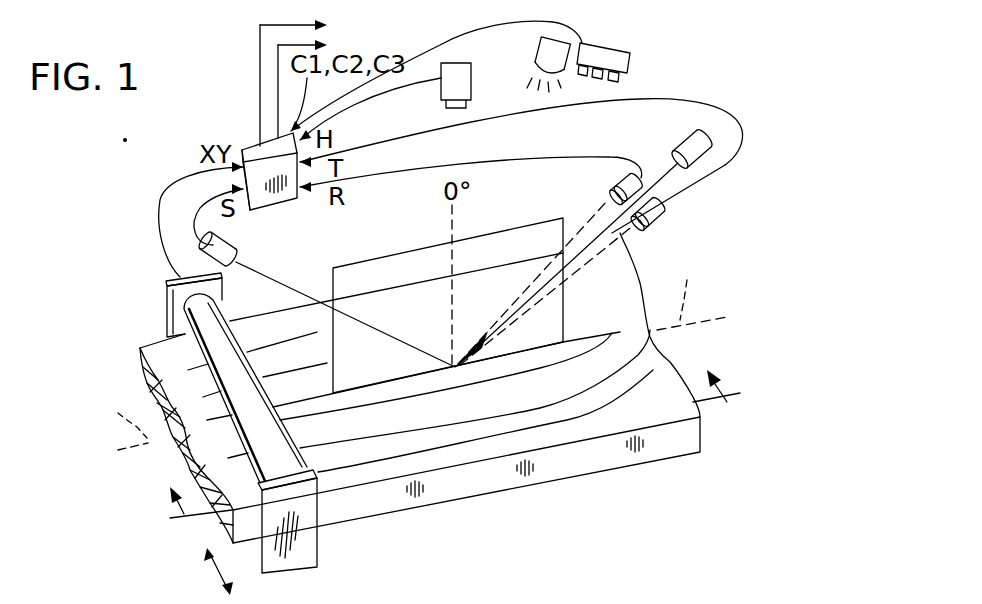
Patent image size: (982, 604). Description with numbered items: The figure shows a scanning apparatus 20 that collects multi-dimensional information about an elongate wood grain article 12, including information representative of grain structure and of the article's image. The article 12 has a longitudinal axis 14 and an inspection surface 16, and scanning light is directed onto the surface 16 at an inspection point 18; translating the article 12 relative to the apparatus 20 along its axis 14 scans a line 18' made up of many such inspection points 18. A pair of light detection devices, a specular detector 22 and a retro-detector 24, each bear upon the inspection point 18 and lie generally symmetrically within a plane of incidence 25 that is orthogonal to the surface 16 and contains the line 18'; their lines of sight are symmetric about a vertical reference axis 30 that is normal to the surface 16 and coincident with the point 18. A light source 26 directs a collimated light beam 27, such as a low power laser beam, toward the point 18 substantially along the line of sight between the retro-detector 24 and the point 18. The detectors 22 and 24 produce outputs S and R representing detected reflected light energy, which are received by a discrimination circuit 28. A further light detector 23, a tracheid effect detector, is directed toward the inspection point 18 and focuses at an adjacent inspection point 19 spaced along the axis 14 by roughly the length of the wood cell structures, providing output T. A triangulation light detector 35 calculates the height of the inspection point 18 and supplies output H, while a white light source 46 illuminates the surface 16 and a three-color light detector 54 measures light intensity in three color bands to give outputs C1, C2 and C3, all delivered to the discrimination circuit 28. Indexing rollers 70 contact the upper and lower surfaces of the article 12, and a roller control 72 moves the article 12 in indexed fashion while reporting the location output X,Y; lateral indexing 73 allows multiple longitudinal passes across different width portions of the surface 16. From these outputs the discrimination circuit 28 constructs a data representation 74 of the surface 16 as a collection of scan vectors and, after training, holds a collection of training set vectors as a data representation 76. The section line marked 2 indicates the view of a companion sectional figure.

The section line 2- 2 is at (461, 457).
The elongate wood grain article 12 is at (540, 472).
The longitudinal axis 14 is at (418, 341).
The inspection surface 16 is at (666, 411).
The inspection point 18 is at (465, 389).
The line 18' is at (600, 306).
The adjacent inspection point 19 is at (462, 368).
The scanning apparatus 20 is at (205, 178).
The specular detector 22 is at (228, 238).
The light detector (tracheid effect detector) 23 is at (660, 218).
The retro-detector 24 is at (612, 182).
The plane of incidence 25 is at (533, 232).
The light source 26 is at (686, 138).
The collimated light beam 27 is at (600, 228).
The discrimination circuit 28 is at (285, 193).
The vertical reference axis 30 is at (455, 266).
The triangulation light detector 35 is at (468, 75).
The white light source 46 is at (550, 57).
The three-color light detector 54 is at (630, 62).
The indexing rollers 70 is at (230, 318).
The roller control 72 is at (180, 277).
The lateral indexing 73 is at (218, 573).
The data representation 74 is at (278, 98).
The data representation 76 is at (258, 46).